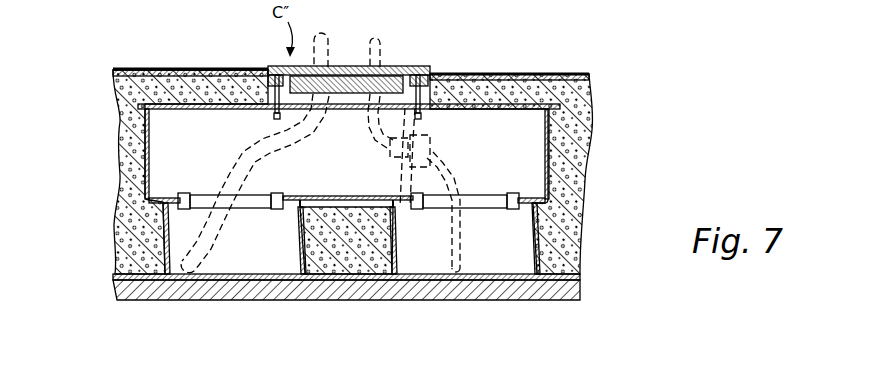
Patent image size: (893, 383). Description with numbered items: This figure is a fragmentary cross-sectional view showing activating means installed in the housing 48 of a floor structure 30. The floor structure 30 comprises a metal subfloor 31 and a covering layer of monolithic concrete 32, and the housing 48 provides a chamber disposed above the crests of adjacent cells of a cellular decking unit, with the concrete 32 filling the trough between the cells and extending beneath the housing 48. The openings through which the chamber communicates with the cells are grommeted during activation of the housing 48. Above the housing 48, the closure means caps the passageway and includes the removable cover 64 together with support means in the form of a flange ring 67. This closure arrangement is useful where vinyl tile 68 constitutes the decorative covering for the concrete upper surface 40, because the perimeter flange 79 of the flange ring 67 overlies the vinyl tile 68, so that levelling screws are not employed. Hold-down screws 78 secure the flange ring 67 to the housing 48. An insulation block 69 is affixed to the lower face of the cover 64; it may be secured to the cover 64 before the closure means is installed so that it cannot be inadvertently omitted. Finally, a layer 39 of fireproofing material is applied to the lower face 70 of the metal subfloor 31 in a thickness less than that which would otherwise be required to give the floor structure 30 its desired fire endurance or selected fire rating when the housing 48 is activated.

The floor structure 30 is at (608, 75).
The metal subfloor 31 is at (549, 231).
The monolithic concrete 32 is at (588, 125).
The layer of fireproofing material 39 is at (553, 287).
The concrete upper surface 40 is at (516, 77).
The housing 48 is at (140, 158).
The removable cover 64 is at (393, 68).
The flange ring 67 is at (440, 70).
The vinyl tile 68 is at (182, 70).
The insulation block 69 is at (348, 77).
The lower face 70 is at (575, 289).
The hold-down screws 78 is at (273, 117).
The perimeter flange 79 is at (265, 68).